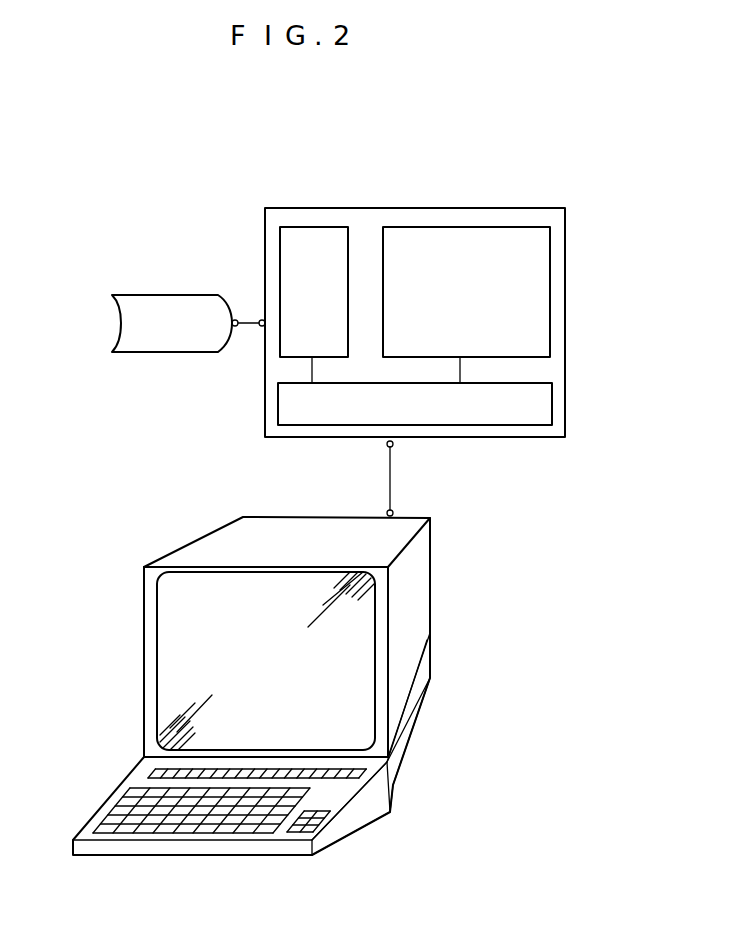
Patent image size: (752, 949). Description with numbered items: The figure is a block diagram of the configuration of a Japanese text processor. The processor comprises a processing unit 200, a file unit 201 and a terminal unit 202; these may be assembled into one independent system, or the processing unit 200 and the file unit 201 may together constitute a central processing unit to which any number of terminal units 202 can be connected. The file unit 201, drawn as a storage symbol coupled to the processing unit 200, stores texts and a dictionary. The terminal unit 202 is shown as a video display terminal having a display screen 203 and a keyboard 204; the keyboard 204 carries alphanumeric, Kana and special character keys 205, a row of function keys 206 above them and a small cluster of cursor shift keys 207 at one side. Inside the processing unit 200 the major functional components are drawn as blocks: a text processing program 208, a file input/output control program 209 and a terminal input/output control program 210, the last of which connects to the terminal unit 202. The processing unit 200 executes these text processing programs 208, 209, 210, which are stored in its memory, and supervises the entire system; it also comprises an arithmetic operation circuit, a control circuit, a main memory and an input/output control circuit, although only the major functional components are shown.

The processing unit 200 is at (422, 208).
The file unit 201 is at (162, 295).
The terminal unit 202 is at (430, 566).
The display screen 203 is at (363, 635).
The keyboard 204 is at (392, 797).
The alphanumeric, Kana and special character keys 205 is at (118, 808).
The function keys 206 is at (148, 773).
The cursor shift keys 207 is at (323, 823).
The text processing program 208 is at (508, 227).
The file input/output control program 209 is at (323, 227).
The terminal input/output control program 210 is at (552, 402).